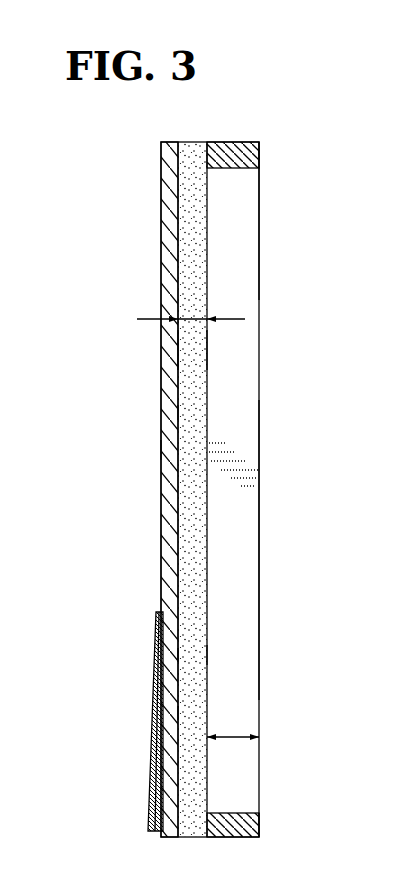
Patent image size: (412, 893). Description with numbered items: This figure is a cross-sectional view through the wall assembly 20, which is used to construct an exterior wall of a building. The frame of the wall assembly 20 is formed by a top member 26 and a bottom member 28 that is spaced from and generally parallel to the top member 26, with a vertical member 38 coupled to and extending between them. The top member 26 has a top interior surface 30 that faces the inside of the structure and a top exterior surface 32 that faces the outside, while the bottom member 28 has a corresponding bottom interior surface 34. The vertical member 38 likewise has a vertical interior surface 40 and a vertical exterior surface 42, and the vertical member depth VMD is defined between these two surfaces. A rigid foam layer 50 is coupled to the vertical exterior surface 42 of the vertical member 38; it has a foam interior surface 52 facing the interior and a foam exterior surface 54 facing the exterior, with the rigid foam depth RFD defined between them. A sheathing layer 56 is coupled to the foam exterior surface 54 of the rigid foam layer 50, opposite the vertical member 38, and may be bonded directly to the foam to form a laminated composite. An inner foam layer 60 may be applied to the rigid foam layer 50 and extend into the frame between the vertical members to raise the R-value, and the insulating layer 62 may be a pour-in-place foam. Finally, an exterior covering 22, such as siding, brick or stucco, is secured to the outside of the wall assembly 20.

The wall assembly 20 is at (262, 124).
The exterior covering 22 is at (150, 745).
The top member 26 is at (222, 142).
The bottom member 28 is at (233, 812).
The top interior surface 30 is at (263, 161).
The top exterior surface 32 is at (165, 163).
The bottom interior surface 34 is at (263, 818).
The vertical member 38 is at (237, 217).
The vertical interior surface 40 is at (263, 538).
The vertical exterior surface 42 is at (207, 530).
The rigid foam layer 50 is at (192, 412).
The foam interior surface 52 is at (212, 352).
The foam exterior surface 54 is at (174, 350).
The sheathing layer 56 is at (160, 452).
The inner foam layer 60 is at (192, 655).
The insulating layer 62 is at (190, 713).
The rigid foam depth RFD is at (226, 315).
The vertical member depth VMD is at (235, 740).